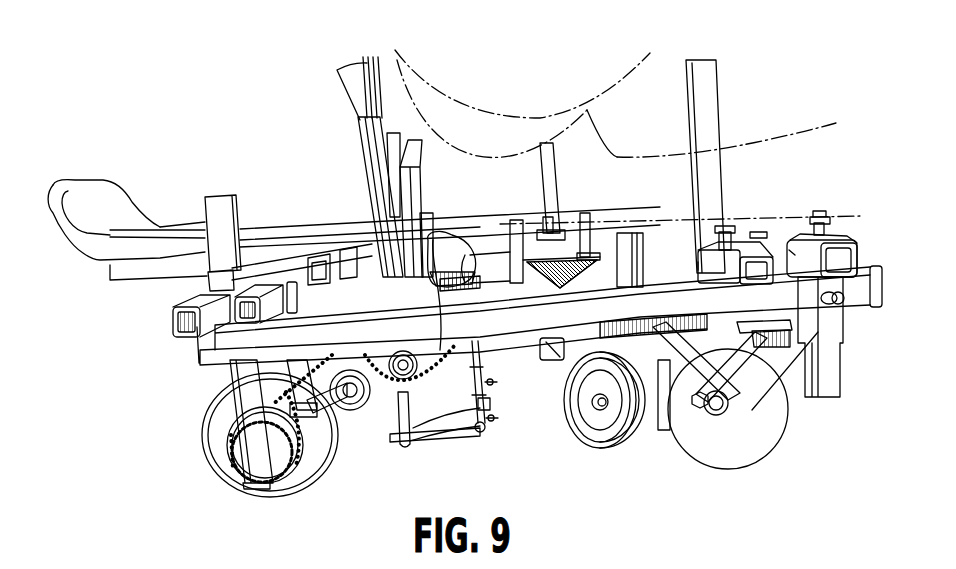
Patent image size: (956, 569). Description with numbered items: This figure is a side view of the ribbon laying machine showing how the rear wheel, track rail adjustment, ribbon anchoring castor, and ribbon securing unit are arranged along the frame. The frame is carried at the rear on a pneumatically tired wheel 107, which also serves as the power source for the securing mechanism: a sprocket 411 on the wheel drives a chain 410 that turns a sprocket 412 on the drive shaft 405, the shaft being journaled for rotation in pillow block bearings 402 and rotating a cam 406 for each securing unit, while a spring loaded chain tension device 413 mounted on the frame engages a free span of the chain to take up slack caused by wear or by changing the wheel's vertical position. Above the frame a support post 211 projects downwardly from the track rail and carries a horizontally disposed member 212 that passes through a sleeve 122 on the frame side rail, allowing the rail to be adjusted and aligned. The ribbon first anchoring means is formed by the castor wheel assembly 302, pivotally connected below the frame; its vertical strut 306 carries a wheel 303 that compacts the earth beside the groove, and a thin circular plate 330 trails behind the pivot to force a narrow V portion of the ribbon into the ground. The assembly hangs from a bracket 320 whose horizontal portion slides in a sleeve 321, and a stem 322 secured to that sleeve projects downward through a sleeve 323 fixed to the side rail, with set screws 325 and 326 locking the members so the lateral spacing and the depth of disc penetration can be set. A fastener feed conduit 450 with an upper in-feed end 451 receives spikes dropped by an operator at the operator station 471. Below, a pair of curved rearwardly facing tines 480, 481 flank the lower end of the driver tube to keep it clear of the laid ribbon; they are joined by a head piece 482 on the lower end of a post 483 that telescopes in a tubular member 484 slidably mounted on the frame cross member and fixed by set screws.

The pneumatically tired wheel 107 is at (205, 462).
The sleeve 122 is at (698, 262).
The support post 211 is at (702, 102).
The horizontally disposed member 212 is at (727, 268).
The castor wheel assembly 302 is at (574, 446).
The wheel 303 is at (610, 452).
The strut 306 is at (618, 263).
The bracket 320 is at (862, 248).
The sleeve 321 is at (799, 255).
The stem 322 is at (829, 387).
The sleeve 323 is at (786, 402).
The set screw 325 is at (816, 212).
The set screw 326 is at (822, 297).
The circular plate 330 is at (753, 451).
The pillow block bearing 402 is at (425, 350).
The drive shaft 405 is at (385, 355).
The cam 406 is at (433, 240).
The chain 410 is at (450, 265).
The sprocket 411 is at (288, 450).
The sprocket 412 is at (388, 363).
The spring loaded chain tension device 413 is at (357, 460).
The fastener feed conduit 450 is at (360, 123).
The upper in-feed end 451 is at (357, 75).
The operator station 471 is at (123, 212).
The curved rearwardly facing tine 480 is at (420, 445).
The curved rearwardly facing tine 481 is at (442, 441).
The head piece 482 is at (482, 432).
The post 483 is at (483, 403).
The tubular member 484 is at (478, 355).